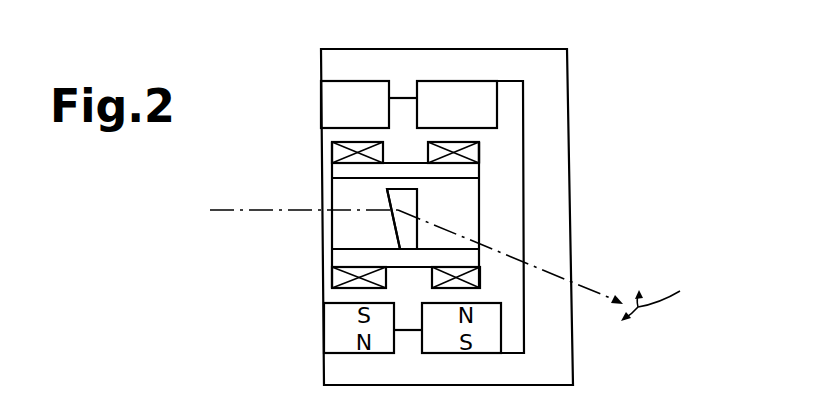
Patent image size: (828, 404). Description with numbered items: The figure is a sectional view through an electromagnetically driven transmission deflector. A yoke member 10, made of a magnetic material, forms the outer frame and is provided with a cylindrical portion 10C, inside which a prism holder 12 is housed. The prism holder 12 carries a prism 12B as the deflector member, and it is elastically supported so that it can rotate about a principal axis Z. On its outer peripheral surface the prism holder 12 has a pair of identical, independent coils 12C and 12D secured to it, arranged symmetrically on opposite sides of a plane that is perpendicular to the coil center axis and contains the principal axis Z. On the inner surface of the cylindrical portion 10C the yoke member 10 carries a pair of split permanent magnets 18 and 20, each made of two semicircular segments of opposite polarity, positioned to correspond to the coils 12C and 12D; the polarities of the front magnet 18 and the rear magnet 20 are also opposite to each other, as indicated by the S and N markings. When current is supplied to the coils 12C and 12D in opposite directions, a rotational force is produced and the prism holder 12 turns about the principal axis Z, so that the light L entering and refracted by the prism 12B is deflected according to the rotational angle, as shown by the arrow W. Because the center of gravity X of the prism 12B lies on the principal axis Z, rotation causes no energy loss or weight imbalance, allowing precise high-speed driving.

The yoke member 10 is at (586, 41).
The cylindrical portion 10C is at (413, 55).
The front permanent magnet 18 is at (378, 87).
The rear permanent magnet 20 is at (443, 88).
The prism holder 12 is at (471, 181).
The prism 12B is at (402, 229).
The coil 12C is at (334, 154).
The coil 12D is at (475, 143).
The light L is at (250, 212).
The principal axis Z is at (400, 209).
The center of gravity X is at (502, 207).
The arrow W is at (662, 300).